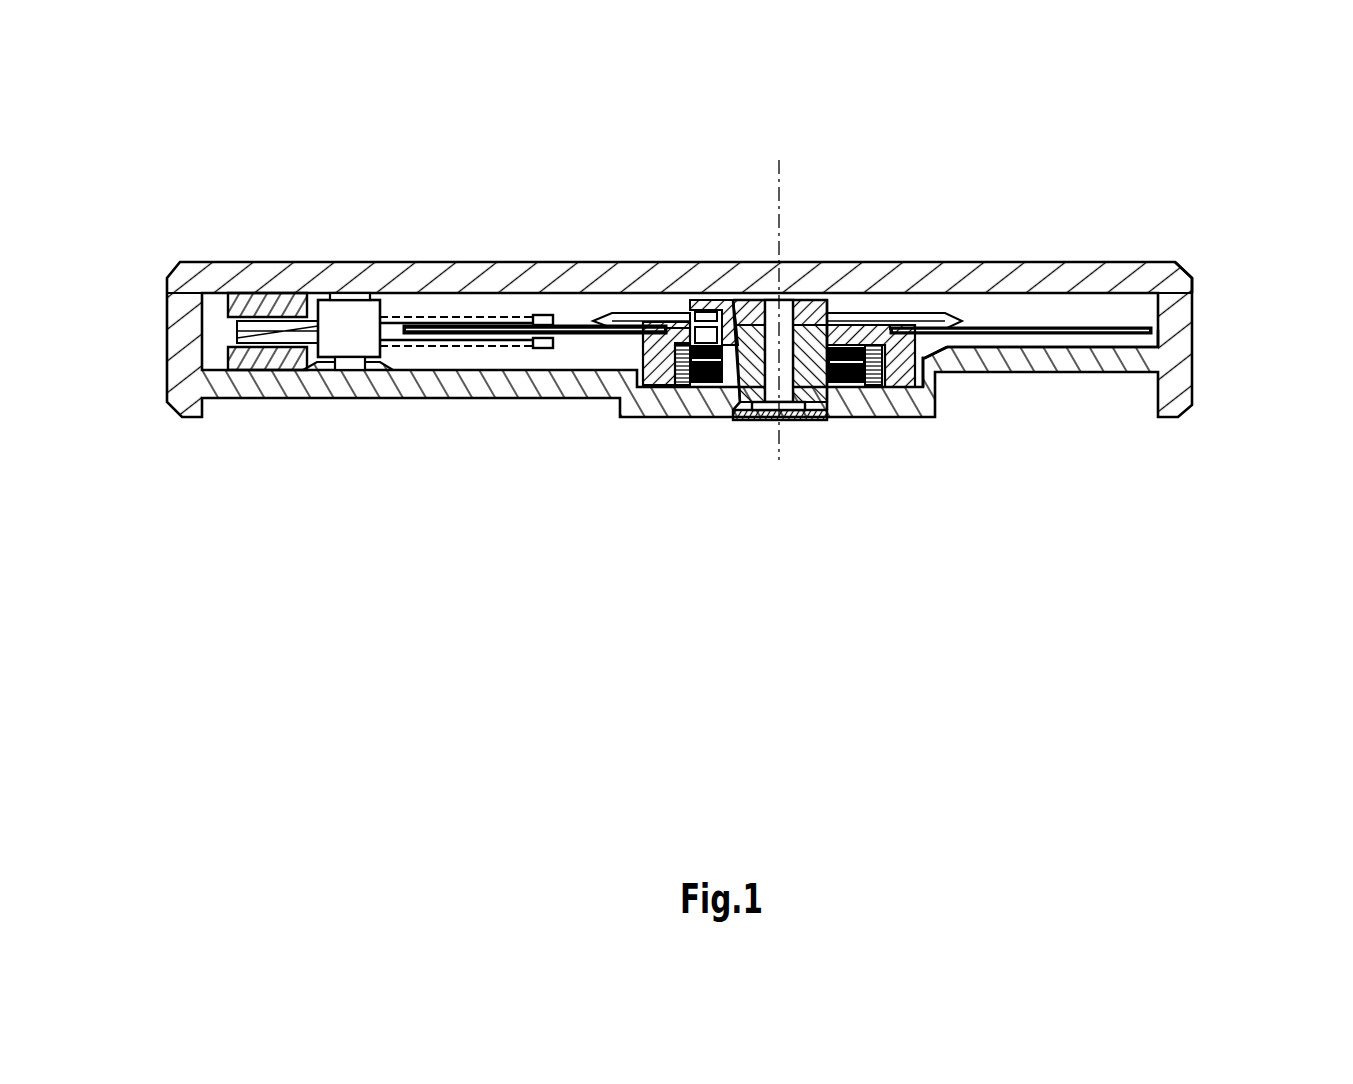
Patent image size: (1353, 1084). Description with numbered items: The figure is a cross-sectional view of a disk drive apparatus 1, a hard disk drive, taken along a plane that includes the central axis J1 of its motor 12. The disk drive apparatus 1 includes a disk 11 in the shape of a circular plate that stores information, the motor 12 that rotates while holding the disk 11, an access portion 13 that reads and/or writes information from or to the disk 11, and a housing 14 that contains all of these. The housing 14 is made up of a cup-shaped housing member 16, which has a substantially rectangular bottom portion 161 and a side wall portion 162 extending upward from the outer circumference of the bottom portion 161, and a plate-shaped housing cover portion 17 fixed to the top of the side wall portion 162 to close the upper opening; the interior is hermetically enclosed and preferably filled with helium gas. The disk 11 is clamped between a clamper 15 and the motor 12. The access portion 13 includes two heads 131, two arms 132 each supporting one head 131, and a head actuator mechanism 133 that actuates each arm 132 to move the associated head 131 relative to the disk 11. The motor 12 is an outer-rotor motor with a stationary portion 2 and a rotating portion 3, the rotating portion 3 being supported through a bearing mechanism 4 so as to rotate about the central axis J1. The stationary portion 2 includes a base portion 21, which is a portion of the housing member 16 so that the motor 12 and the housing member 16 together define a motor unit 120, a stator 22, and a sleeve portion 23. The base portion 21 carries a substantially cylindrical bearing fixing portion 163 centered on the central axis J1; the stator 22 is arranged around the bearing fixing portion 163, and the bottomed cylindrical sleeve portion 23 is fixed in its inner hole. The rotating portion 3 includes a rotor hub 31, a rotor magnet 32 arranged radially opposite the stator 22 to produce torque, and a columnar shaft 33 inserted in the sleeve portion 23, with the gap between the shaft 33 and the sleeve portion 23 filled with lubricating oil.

The disk drive apparatus 1 is at (707, 414).
The disk 11 is at (1100, 328).
The motor 12 is at (679, 493).
The motor unit 120 is at (1048, 623).
The access portion 13 is at (603, 279).
The head 131 is at (567, 325).
The arm 132 is at (450, 316).
The head actuator mechanism 133 is at (345, 332).
The housing 14 is at (1180, 515).
The clamper 15 is at (935, 312).
The housing member 16 is at (1040, 462).
The bottom portion 161 is at (987, 360).
The side wall portion 162 is at (1153, 340).
The bearing fixing portion 163 is at (833, 415).
The housing cover portion 17 is at (1177, 283).
The stationary portion 2 is at (810, 346).
The base portion 21 is at (897, 405).
The stator 22 is at (858, 395).
The sleeve portion 23 is at (808, 418).
The rotating portion 3 is at (855, 289).
The rotor hub 31 is at (838, 320).
The rotor magnet 32 is at (870, 328).
The shaft 33 is at (808, 302).
The bearing mechanism 4 is at (813, 450).
The central axis J1 is at (780, 198).